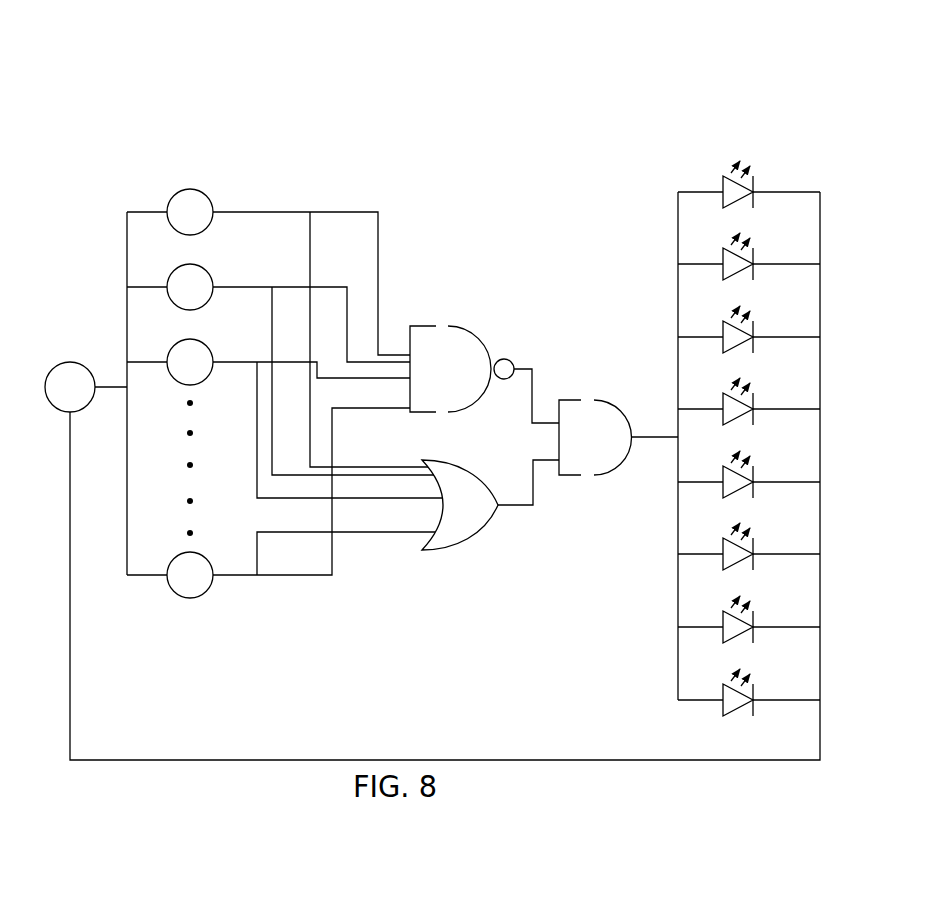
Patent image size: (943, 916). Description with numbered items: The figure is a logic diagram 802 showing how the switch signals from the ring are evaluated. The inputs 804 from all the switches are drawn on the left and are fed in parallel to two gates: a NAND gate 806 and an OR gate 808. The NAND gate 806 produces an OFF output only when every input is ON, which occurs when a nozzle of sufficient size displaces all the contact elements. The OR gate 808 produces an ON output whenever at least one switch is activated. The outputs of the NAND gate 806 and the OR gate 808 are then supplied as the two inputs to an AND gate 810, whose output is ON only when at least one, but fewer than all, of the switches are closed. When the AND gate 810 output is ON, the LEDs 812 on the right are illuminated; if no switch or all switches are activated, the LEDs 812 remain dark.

The logic diagram 802 is at (400, 100).
The inputs 804 is at (194, 190).
The NAND gate 806 is at (457, 326).
The OR gate 808 is at (480, 540).
The AND gate 810 is at (570, 398).
The LEDs 812 is at (722, 183).